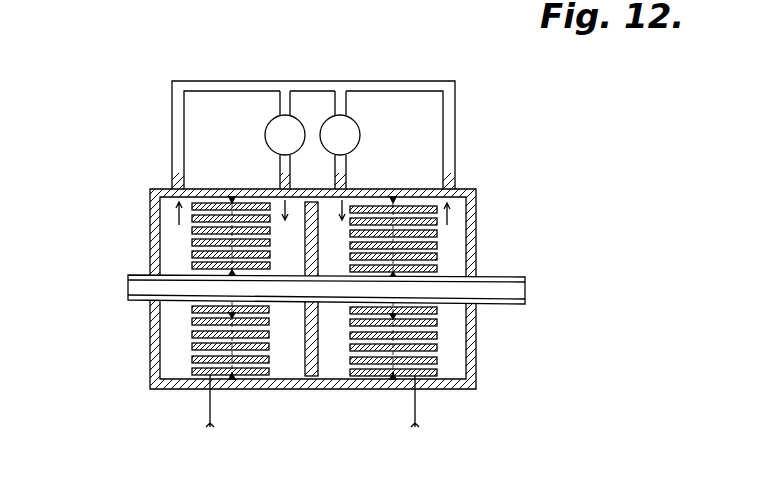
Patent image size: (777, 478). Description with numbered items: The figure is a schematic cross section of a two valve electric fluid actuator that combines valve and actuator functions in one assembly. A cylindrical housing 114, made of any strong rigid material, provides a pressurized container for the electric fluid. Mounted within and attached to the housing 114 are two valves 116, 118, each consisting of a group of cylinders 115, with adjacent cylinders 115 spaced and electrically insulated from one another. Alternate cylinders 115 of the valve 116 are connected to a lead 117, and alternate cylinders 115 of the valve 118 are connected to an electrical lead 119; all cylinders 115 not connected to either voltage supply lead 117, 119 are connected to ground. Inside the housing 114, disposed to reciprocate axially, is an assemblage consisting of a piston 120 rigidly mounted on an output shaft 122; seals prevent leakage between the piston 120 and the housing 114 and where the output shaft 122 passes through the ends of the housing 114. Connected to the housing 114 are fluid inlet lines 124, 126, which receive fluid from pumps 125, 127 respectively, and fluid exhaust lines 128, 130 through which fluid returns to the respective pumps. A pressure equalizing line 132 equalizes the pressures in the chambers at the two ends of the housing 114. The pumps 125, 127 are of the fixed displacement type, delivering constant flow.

The cylindrical housing 114 is at (158, 390).
The cylinders 115 is at (325, 288).
The valve 116 is at (190, 333).
The lead 117 is at (213, 416).
The valve 118 is at (437, 247).
The electrical lead 119 is at (418, 415).
The piston 120 is at (303, 392).
The output shaft 122 is at (326, 289).
The fluid inlet line 124 is at (279, 165).
The pump 125 is at (272, 121).
The fluid inlet line 126 is at (348, 162).
The pump 127 is at (355, 121).
The fluid exhaust line 128 is at (172, 162).
The fluid exhaust line 130 is at (455, 162).
The pressure equalizing line 132 is at (313, 80).